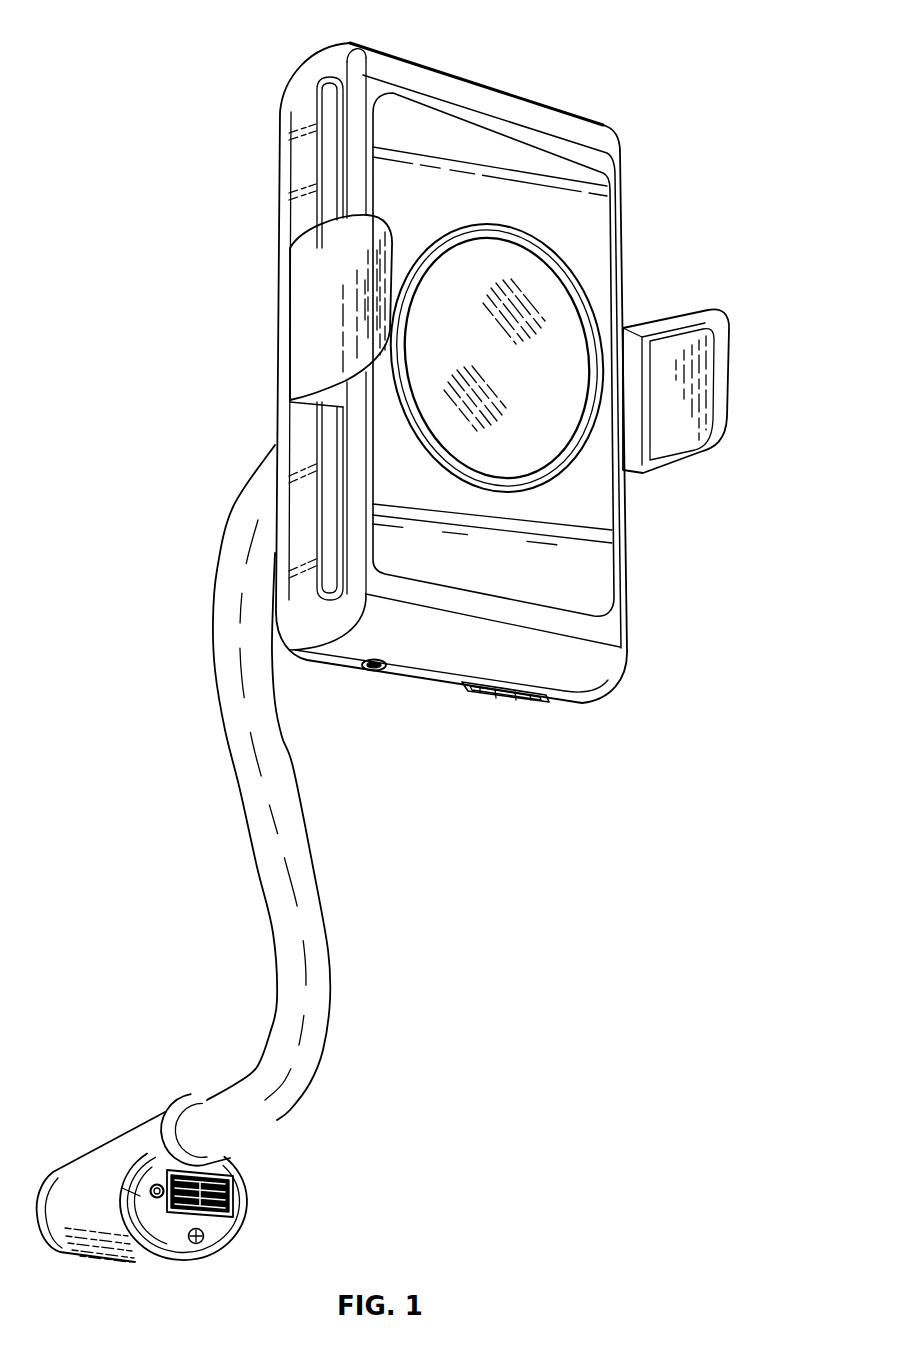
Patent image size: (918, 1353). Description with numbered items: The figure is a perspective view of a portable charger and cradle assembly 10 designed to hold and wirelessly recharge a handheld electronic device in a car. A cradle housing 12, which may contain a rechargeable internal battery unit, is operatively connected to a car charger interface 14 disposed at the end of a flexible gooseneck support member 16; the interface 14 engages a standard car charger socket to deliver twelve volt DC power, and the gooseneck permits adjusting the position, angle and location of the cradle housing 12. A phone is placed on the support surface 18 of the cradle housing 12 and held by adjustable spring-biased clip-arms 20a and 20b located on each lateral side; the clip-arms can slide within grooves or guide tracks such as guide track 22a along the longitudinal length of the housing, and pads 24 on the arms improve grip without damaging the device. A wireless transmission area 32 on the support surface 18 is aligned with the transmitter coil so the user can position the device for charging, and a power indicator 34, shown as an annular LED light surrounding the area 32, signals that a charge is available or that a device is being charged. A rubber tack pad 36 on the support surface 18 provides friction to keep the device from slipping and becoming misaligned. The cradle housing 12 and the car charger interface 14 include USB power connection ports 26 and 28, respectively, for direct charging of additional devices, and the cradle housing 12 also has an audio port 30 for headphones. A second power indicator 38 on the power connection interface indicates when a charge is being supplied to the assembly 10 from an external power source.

The portable charger and cradle assembly 10 is at (256, 28).
The cradle housing 12 is at (594, 134).
The car charger interface 14 is at (90, 1163).
The support member 16 is at (303, 1023).
The support surface 18 is at (604, 522).
The clip-arm 20a is at (298, 325).
The clip-arm 20b is at (730, 392).
The guide track 22a is at (335, 455).
The pad 24 is at (672, 437).
The power connection port 26 is at (500, 705).
The power connection port 28 is at (248, 1200).
The audio port 30 is at (374, 688).
The wireless transmission area 32 is at (475, 262).
The power indicator 34 is at (537, 238).
The rubber tack pad 36 is at (604, 238).
The second power indicator 38 is at (157, 1205).